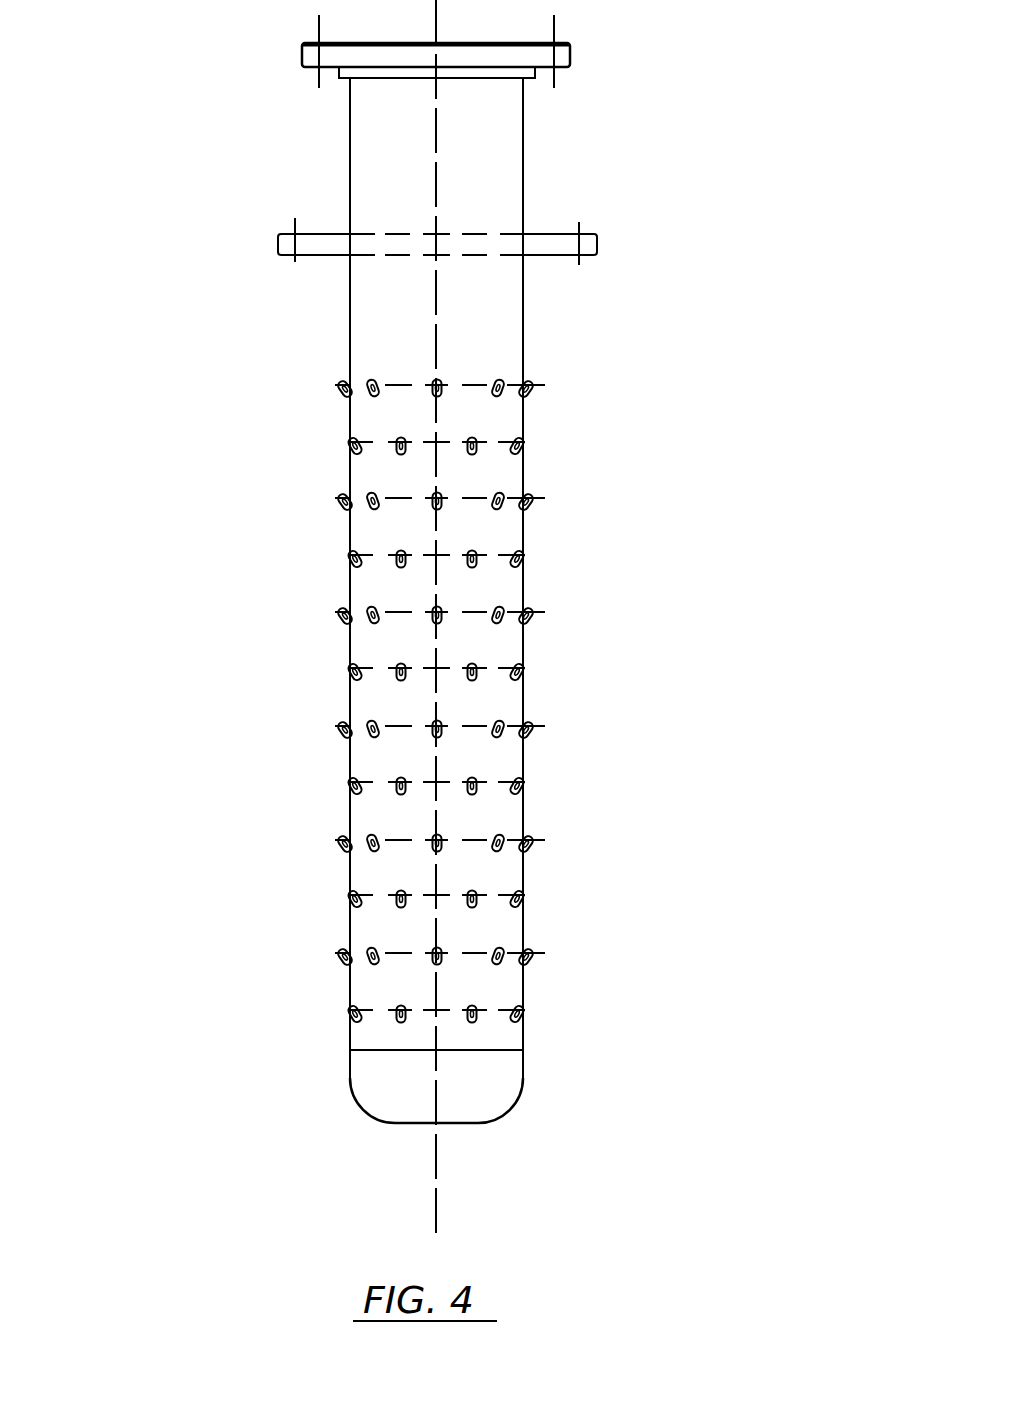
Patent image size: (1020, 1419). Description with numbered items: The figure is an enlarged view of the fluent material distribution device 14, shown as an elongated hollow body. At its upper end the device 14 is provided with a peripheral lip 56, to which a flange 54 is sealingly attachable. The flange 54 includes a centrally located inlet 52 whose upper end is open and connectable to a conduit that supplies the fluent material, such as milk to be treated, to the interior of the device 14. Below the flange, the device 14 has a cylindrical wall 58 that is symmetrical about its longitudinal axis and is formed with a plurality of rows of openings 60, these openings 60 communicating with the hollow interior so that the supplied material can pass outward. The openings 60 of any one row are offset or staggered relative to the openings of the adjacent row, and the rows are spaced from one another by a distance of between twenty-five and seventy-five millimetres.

The fluent material distribution device 14 is at (440, 600).
The inlet 52 is at (524, 115).
The flange 54 is at (597, 245).
The peripheral lip 56 is at (572, 56).
The cylindrical wall 58 is at (513, 587).
The openings 60 is at (530, 397).